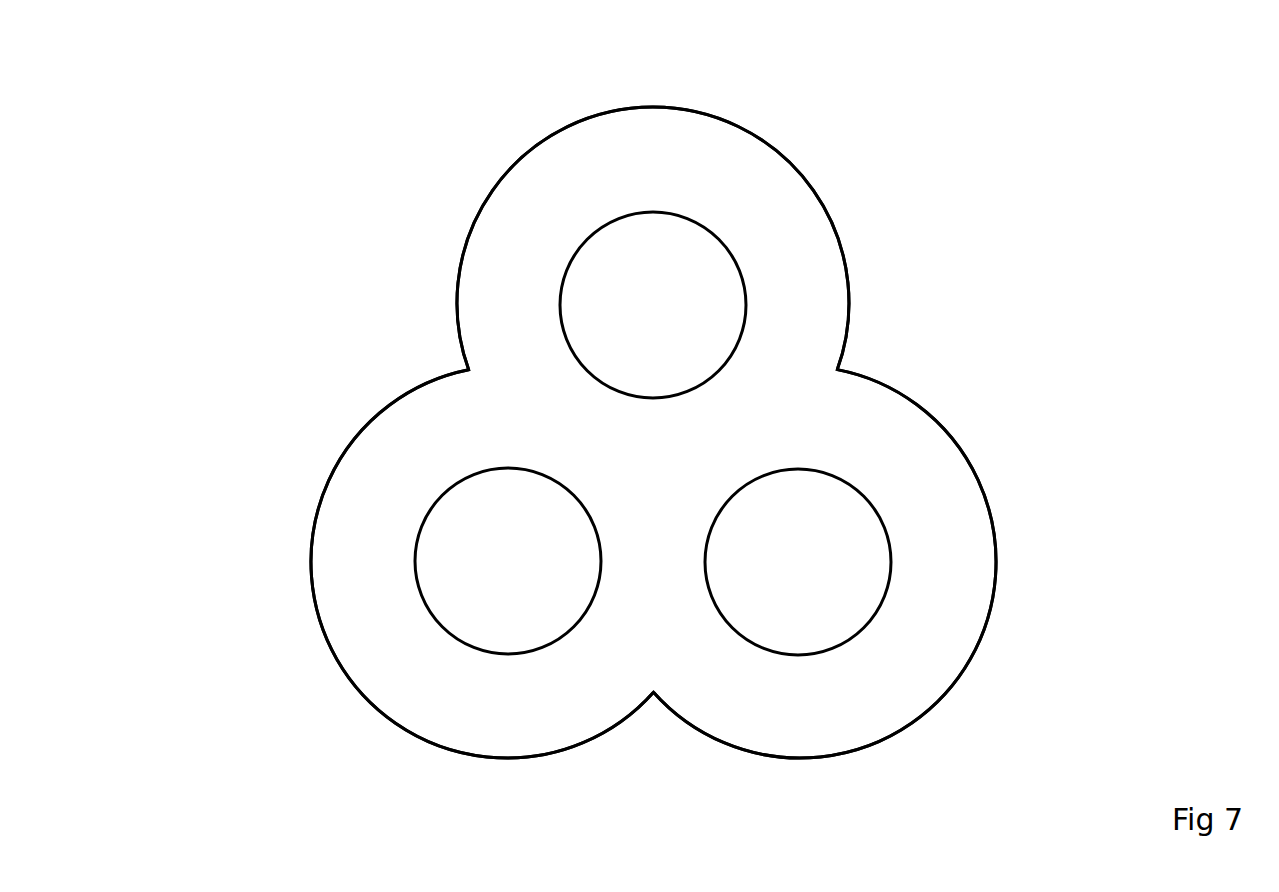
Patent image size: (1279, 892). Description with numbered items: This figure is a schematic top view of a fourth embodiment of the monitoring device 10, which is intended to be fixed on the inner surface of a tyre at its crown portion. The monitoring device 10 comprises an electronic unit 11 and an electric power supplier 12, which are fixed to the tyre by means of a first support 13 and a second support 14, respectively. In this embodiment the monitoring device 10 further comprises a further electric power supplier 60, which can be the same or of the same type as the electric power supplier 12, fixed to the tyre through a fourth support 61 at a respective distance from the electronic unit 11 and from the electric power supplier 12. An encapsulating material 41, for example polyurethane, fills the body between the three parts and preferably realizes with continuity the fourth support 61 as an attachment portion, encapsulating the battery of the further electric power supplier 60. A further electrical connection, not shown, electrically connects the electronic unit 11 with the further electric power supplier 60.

The monitoring device 10 is at (268, 235).
The electronic unit 11 is at (390, 628).
The electric power supplier 12 is at (922, 508).
The first support 13 is at (358, 520).
The second support 14 is at (897, 675).
The encapsulating material 41 is at (664, 466).
The further electric power supplier 60 is at (796, 264).
The fourth support 61 is at (548, 165).